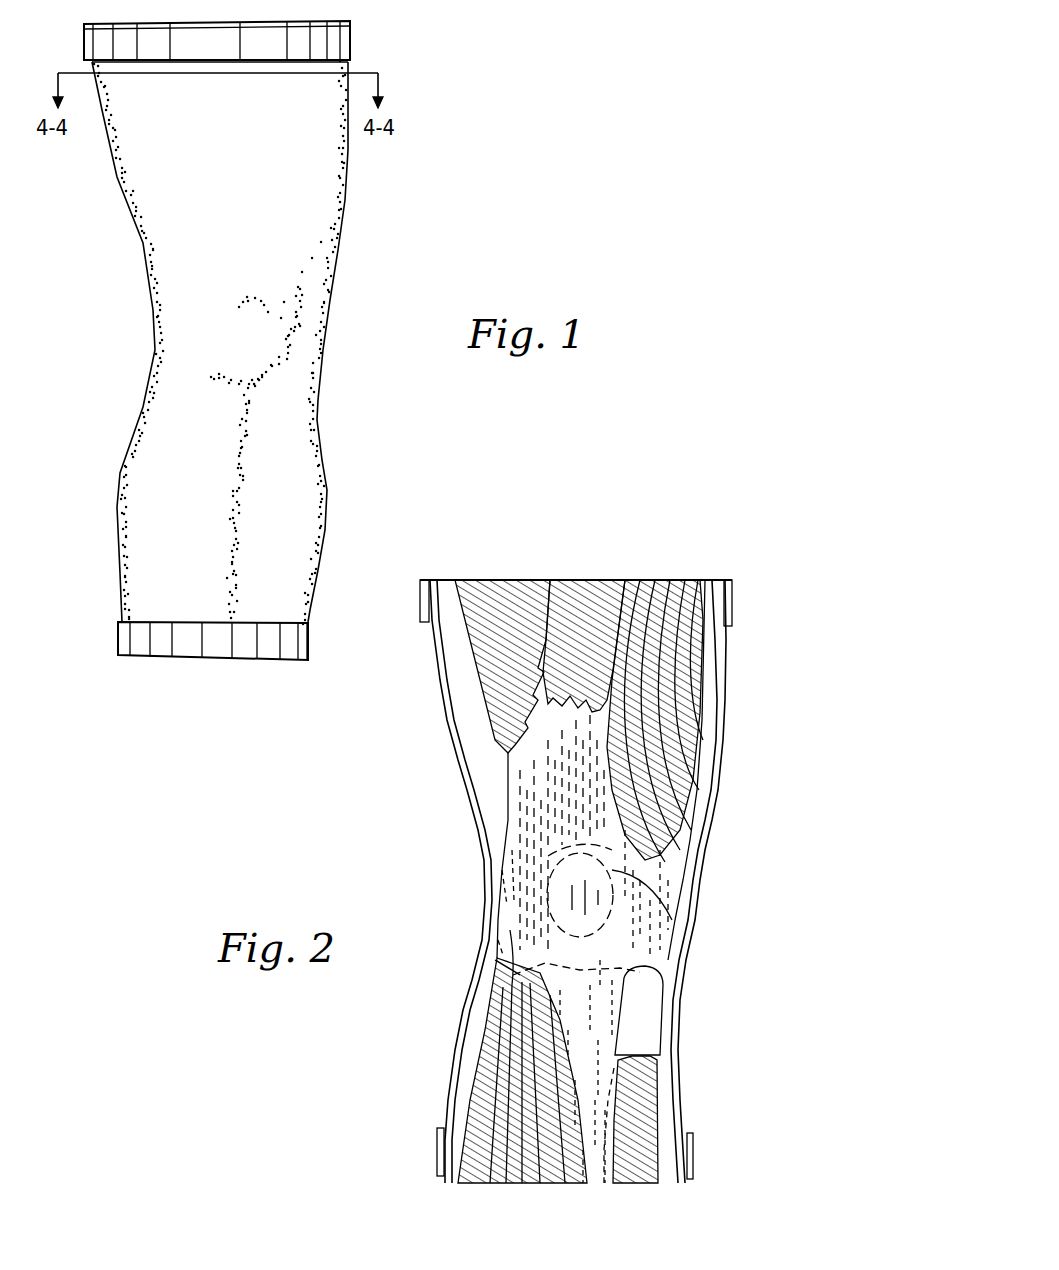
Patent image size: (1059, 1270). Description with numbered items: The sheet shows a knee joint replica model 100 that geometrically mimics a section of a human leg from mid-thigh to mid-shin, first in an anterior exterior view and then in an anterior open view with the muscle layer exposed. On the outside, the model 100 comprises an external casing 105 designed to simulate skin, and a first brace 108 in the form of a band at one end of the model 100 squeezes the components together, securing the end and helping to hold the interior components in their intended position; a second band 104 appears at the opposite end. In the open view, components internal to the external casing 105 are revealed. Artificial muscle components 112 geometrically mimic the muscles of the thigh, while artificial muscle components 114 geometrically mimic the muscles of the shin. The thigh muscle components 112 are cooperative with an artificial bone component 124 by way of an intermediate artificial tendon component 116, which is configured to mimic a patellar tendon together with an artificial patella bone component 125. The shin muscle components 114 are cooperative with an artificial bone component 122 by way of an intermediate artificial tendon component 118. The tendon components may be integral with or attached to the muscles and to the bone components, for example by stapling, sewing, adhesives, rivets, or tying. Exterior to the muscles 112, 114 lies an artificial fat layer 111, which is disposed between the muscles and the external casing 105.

In FIG. 1, the knee joint replica model 100 is at (418, 262).
In FIG. 1, the lower band 104 is at (120, 634).
In FIG. 1, the external casing 105 is at (338, 203).
In FIG. 2, the external casing 105 is at (723, 700).
In FIG. 1, the first brace 108 is at (352, 46).
In FIG. 2, the artificial fat layer 111 is at (713, 665).
In FIG. 2, the artificial muscle components 112 is at (650, 578).
In FIG. 2, the artificial muscle components 114 is at (475, 1100).
In FIG. 2, the artificial tendon component 116 is at (580, 807).
In FIG. 2, the artificial tendon component 118 is at (507, 930).
In FIG. 2, the artificial bone component 122 is at (648, 890).
In FIG. 2, the artificial bone component 124 is at (613, 1060).
In FIG. 2, the artificial patella bone component 125 is at (598, 895).